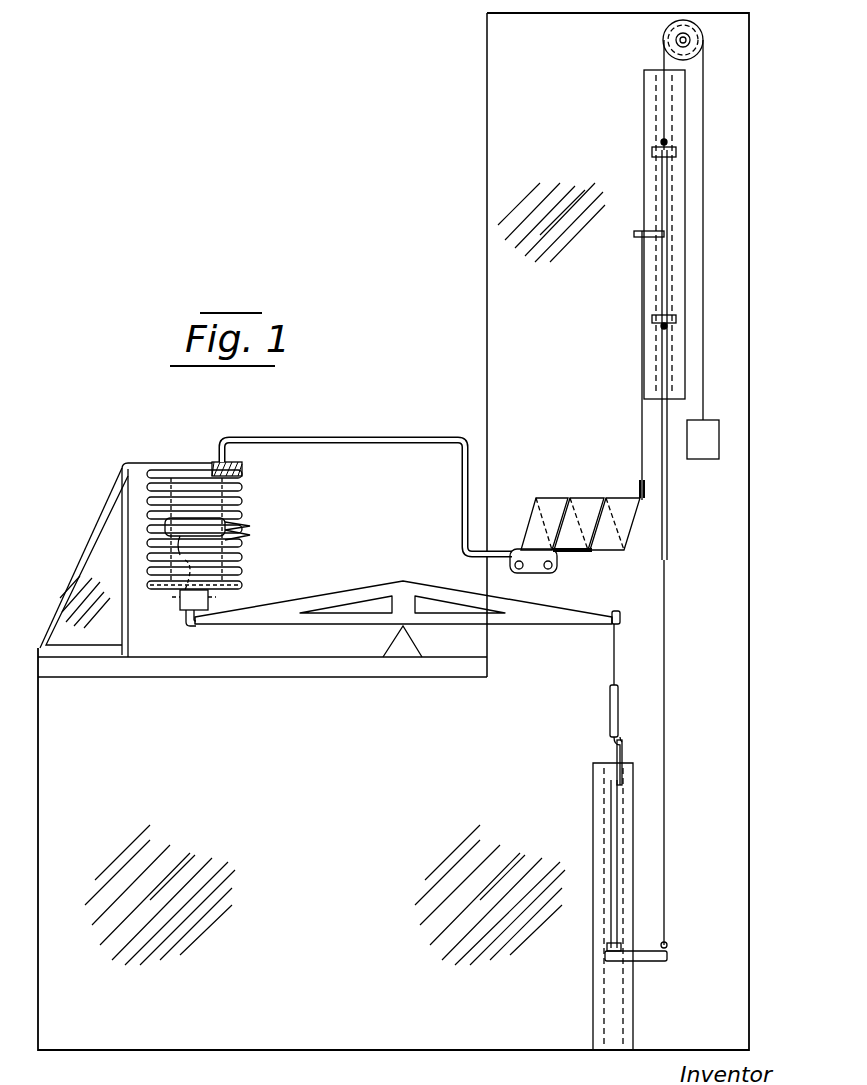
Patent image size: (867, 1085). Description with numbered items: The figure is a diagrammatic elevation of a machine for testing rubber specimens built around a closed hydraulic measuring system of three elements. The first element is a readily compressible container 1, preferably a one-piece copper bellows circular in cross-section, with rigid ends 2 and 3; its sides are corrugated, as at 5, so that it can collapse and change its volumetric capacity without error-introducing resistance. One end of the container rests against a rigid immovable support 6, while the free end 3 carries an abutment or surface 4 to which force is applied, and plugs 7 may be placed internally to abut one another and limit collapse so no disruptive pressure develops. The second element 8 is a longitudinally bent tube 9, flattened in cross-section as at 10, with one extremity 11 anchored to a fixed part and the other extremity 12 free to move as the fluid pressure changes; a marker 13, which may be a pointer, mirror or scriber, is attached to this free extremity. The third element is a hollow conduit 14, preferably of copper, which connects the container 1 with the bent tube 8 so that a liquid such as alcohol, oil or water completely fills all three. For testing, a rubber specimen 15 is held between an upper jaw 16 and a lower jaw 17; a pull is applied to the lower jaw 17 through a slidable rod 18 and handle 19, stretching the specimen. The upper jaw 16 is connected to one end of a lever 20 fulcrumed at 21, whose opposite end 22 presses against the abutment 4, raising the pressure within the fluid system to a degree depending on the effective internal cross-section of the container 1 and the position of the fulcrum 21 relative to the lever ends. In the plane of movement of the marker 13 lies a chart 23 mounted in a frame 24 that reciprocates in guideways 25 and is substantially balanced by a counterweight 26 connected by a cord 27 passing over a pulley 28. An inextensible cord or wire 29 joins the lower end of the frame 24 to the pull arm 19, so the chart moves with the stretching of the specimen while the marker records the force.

The compressible container 1 is at (243, 502).
The rigid end 2 is at (244, 472).
The rigid end 3 is at (244, 584).
The abutment 4 is at (190, 600).
The corrugations 5 is at (250, 535).
The rigid support 6 is at (125, 465).
The plugs 7 is at (165, 530).
The bent tube element 8 is at (596, 498).
The longitudinally bent tube 9 is at (536, 518).
The flattened cross-section 10 is at (572, 553).
The anchored extremity 11 is at (528, 552).
The free extremity 12 is at (640, 500).
The marker 13 is at (640, 235).
The conduit 14 is at (417, 437).
The rubber specimen 15 is at (616, 746).
The upper jaw 16 is at (610, 708).
The lower jaw 17 is at (611, 804).
The slidable rod 18 is at (612, 902).
The handle 19 is at (648, 962).
The lever 20 is at (400, 584).
The fulcrum 21 is at (401, 654).
The lever end 22 is at (194, 628).
The chart 23 is at (663, 255).
The frame 24 is at (655, 319).
The guideways 25 is at (676, 92).
The counterweight 26 is at (716, 440).
The cord 27 is at (703, 215).
The pulley 28 is at (700, 38).
The inextensible cord 29 is at (666, 705).